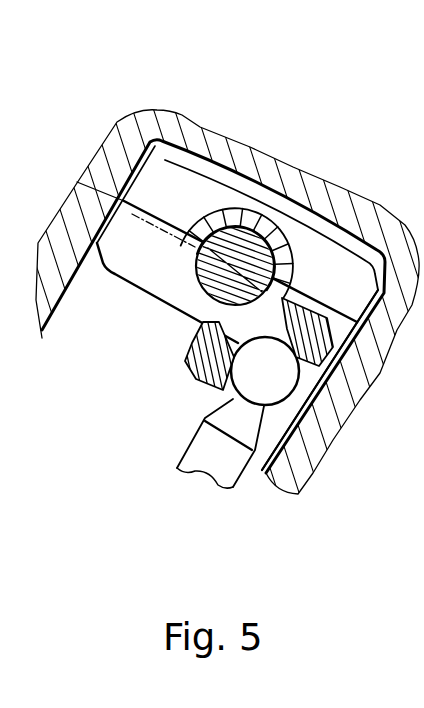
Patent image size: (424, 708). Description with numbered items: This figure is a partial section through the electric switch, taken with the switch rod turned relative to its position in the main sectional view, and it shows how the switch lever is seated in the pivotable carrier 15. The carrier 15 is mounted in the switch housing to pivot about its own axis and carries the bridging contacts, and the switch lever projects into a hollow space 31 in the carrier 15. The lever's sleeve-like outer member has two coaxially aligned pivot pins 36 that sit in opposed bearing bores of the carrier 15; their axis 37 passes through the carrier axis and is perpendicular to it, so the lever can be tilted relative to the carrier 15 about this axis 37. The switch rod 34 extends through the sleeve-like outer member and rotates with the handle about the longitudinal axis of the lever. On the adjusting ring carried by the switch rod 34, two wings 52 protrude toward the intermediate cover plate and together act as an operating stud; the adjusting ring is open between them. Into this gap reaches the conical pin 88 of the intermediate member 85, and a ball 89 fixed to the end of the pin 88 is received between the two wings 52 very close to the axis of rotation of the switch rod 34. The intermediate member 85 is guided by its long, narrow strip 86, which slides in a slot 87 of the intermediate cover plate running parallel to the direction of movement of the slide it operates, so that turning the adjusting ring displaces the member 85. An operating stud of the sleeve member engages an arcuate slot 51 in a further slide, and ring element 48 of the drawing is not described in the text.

The carrier 15 is at (364, 222).
The hollow space 31 is at (204, 165).
The pivot pins 36 is at (128, 135).
The axis 37 is at (167, 230).
The bearing ring 48 is at (283, 242).
The switch rod 34 is at (203, 288).
The ball 89 is at (242, 400).
The wings 52 is at (186, 365).
The conical pin 88 is at (203, 467).
The intermediate member 85 is at (256, 494).
The elongate strip 86 is at (423, 508).
The slot 87 is at (423, 583).
The arcuate slot 51 is at (411, 653).